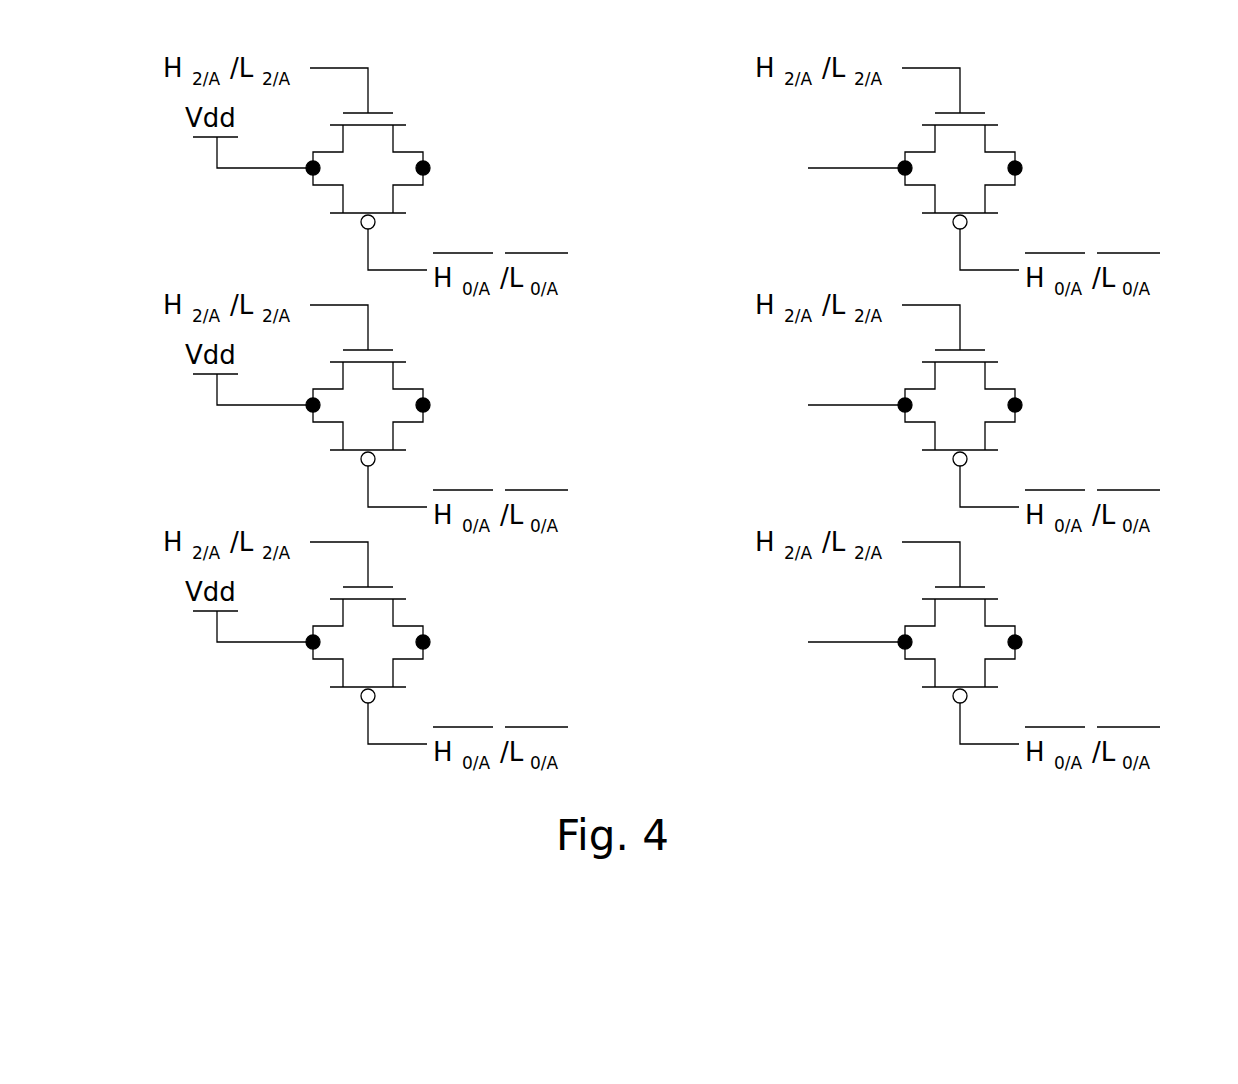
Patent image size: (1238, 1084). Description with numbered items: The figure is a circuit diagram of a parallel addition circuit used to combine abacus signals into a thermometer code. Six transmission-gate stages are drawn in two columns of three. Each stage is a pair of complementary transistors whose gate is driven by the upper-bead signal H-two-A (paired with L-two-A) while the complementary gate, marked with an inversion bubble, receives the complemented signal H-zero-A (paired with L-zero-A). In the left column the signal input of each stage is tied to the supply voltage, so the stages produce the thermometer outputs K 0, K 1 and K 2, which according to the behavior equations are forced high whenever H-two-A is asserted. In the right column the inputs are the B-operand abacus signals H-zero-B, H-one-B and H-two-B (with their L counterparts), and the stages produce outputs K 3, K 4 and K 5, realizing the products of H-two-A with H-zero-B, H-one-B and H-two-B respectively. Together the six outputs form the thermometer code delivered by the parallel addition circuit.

The transmission gate producing output K0 0 is at (365, 176).
The transmission gate producing output K1 1 is at (365, 413).
The transmission gate producing output K2 2 is at (365, 650).
The transmission gate producing output K3 3 is at (910, 176).
The transmission gate producing output K4 4 is at (910, 413).
The transmission gate producing output K5 5 is at (910, 650).